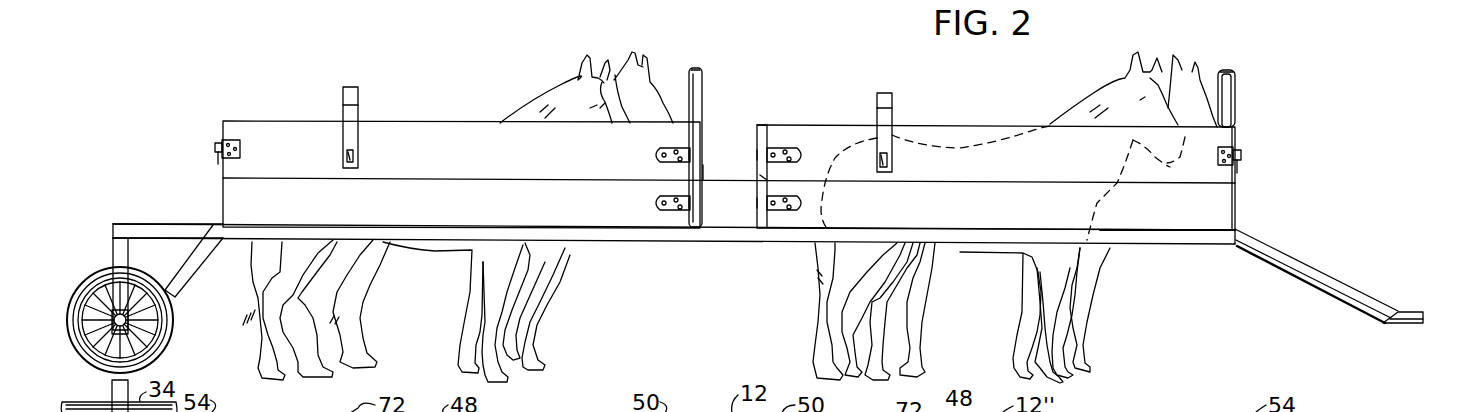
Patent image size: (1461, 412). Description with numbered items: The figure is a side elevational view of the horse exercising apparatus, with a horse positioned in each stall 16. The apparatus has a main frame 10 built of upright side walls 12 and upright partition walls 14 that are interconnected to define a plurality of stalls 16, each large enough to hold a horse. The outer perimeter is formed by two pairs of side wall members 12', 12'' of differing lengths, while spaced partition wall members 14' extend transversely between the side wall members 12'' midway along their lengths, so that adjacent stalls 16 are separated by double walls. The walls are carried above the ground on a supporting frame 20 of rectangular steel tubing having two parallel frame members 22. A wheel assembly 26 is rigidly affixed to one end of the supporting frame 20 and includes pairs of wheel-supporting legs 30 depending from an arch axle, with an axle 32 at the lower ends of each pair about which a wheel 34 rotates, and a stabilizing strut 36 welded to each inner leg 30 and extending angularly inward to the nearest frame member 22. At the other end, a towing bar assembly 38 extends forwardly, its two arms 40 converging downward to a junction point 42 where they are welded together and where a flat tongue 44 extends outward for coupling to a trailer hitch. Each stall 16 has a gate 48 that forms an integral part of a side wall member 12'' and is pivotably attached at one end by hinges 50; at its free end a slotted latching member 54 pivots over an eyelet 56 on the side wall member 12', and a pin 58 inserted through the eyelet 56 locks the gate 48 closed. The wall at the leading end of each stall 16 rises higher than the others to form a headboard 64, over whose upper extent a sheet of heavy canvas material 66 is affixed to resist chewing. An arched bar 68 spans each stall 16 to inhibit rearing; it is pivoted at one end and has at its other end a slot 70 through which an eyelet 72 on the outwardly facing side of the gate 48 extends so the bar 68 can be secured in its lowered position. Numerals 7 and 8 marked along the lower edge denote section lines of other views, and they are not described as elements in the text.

The section line 7 is at (1165, 394).
The section line 8 is at (884, 405).
The main frame 10 is at (716, 411).
The upright side wall 12 is at (973, 201).
The upright side wall member 12' is at (1265, 170).
The upright side wall member 12'' is at (461, 199).
The upright partition wall 14 is at (748, 154).
The partition wall member 14' is at (733, 155).
The stall 16 is at (563, 405).
The supporting frame 20 is at (1198, 244).
The frame member 22 is at (1142, 244).
The wheel assembly 26 is at (113, 235).
The wheel-supporting leg 30 is at (112, 262).
The axle 32 is at (162, 335).
The tire 34 is at (160, 356).
The stabilizing strut 36 is at (190, 265).
The towing bar assembly 38 is at (1325, 270).
The arm 40 is at (1330, 287).
The junction point 42 is at (1403, 312).
The tongue 44 is at (1410, 312).
The gate 48 is at (526, 167).
The hinge 50 is at (660, 152).
The slotted latching member 54 is at (241, 150).
The eyelet 56 is at (215, 147).
The pin 58 is at (218, 158).
The headboard 64 is at (690, 90).
The sheet of heavy canvas material 66 is at (700, 68).
The arched bar 68 is at (358, 96).
The slot 70 is at (353, 155).
The eyelet 72 is at (353, 160).